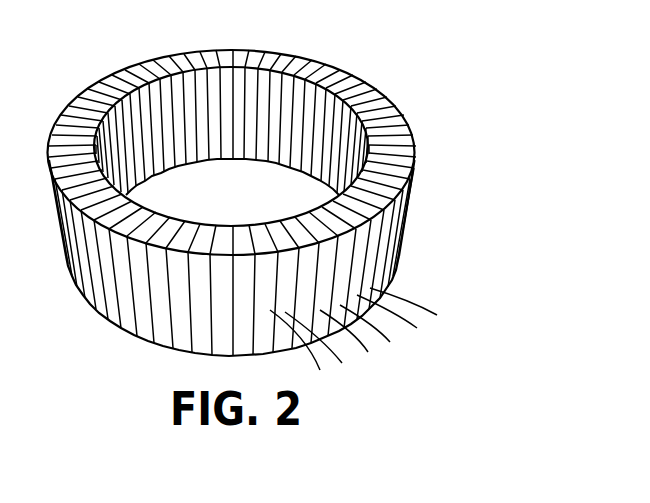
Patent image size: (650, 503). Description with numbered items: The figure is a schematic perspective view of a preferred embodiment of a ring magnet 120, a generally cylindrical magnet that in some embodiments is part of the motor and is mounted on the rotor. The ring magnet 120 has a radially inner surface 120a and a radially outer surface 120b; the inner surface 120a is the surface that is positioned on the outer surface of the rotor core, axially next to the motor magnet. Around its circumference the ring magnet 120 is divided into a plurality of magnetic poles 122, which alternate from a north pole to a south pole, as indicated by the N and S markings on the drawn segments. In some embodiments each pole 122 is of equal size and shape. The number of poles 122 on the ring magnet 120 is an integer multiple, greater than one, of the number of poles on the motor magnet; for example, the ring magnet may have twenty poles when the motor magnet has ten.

The ring magnet 120 is at (286, 208).
The radially inner surface 120a is at (325, 82).
The radially outer surface 120b is at (410, 173).
The magnetic poles 122 is at (390, 257).